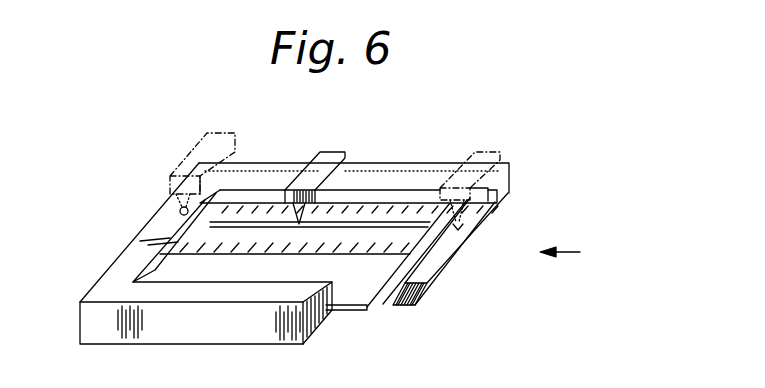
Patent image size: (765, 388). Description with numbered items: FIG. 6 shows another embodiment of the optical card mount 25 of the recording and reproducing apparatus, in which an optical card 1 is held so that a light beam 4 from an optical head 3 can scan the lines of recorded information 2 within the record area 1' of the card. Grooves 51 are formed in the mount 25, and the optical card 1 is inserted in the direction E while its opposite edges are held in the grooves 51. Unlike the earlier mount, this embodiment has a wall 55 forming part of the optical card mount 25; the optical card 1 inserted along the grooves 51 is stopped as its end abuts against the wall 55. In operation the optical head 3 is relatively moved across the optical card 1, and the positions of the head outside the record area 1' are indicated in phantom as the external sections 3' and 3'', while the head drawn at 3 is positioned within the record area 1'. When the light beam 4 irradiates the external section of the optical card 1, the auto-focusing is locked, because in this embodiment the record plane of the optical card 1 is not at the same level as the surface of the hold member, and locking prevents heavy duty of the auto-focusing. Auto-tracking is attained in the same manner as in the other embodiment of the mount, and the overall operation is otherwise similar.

The optical card 1 is at (289, 253).
The record area 1' is at (456, 238).
The lines of recorded information 2 is at (380, 172).
The optical card mount 25 is at (426, 172).
The optical head 3 is at (319, 150).
The optical head (external position) 3' is at (202, 149).
The optical head (external position) 3'' is at (491, 162).
The light beam 4 is at (290, 190).
The grooves 51 is at (496, 197).
The wall 55 is at (150, 265).
The insertion direction E is at (569, 254).